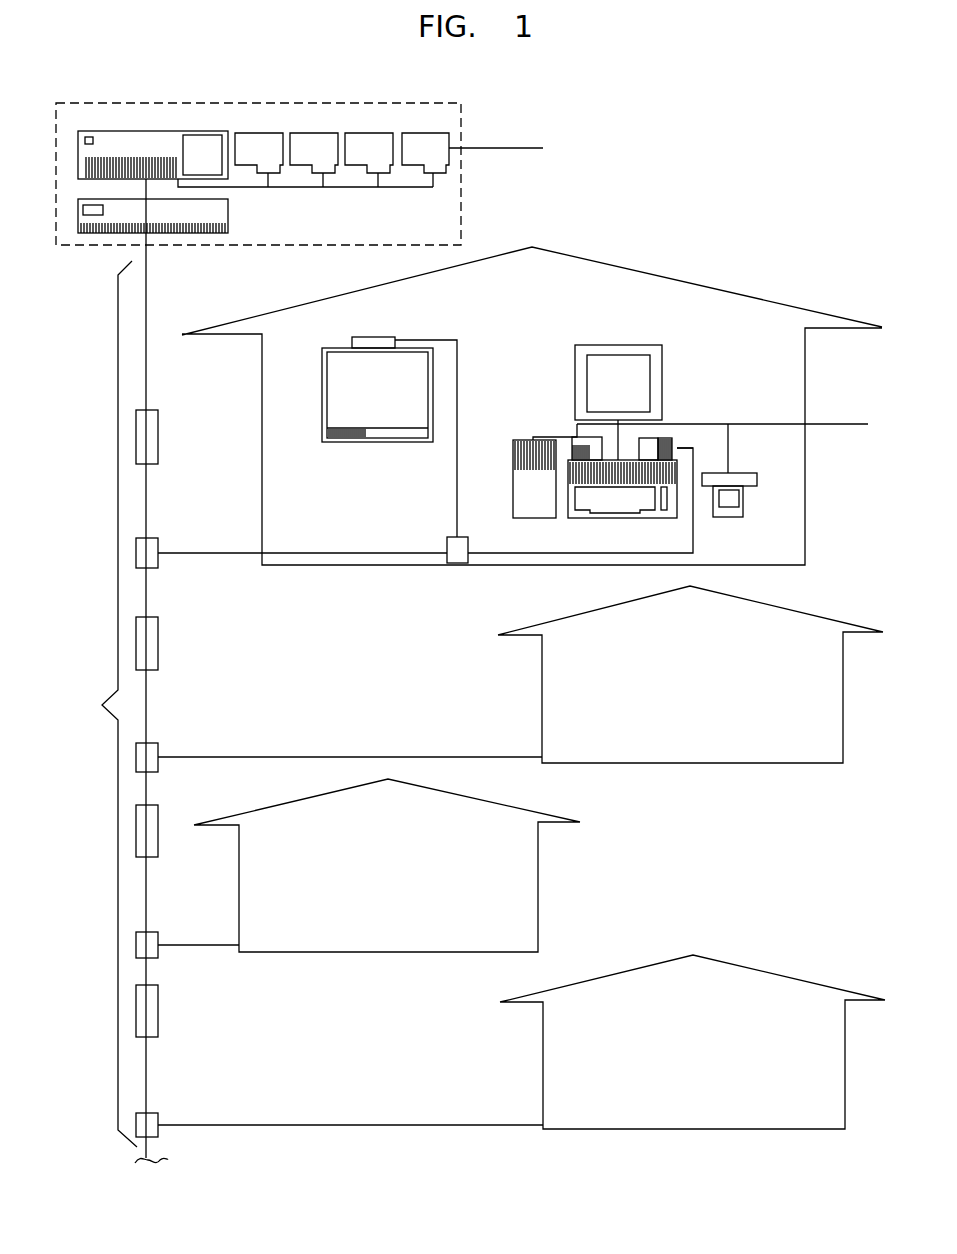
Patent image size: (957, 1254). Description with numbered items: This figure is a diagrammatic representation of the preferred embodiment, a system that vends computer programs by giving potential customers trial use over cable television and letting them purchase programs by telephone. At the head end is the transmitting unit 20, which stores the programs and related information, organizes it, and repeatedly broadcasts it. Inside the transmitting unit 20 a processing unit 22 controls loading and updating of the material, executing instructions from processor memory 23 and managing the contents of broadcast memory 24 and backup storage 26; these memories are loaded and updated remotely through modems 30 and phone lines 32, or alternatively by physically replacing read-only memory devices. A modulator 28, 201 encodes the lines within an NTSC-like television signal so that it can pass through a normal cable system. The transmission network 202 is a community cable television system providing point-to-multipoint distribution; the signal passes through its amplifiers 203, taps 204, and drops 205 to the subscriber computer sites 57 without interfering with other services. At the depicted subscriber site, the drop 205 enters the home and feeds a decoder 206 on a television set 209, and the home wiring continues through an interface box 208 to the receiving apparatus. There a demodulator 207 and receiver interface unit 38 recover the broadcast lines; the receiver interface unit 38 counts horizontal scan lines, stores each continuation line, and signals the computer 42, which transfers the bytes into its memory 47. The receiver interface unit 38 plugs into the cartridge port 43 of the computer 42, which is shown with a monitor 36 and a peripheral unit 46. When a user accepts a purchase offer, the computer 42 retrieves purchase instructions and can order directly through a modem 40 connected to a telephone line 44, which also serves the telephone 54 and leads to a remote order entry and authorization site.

The transmitting unit 20 is at (287, 102).
The processing unit 22 is at (146, 130).
The modulator 28 is at (228, 210).
The modulator 201 is at (198, 216).
The processor memory 23 is at (247, 160).
The broadcast memory 24 is at (302, 160).
The backup storage 26 is at (357, 160).
The modem 30 is at (413, 160).
The phone line 32 is at (506, 148).
The transmission network 202 is at (111, 671).
The amplifier 203 is at (158, 438).
The tap 204 is at (158, 545).
The drop 205 is at (222, 565).
The television set 209 is at (322, 368).
The decoder 206 is at (380, 337).
The interface box 208 is at (447, 545).
The monitor 36 is at (604, 388).
The modem 40 is at (553, 436).
The peripheral unit 46 is at (522, 503).
The computer 42 is at (592, 508).
The cartridge port 43 is at (654, 482).
The receiver interface unit 38 is at (650, 440).
The demodulator 207 is at (665, 439).
The telephone line 44 is at (770, 424).
The memory 47 is at (667, 470).
The telephone device 54 is at (730, 518).
The computer site 57 is at (680, 697).